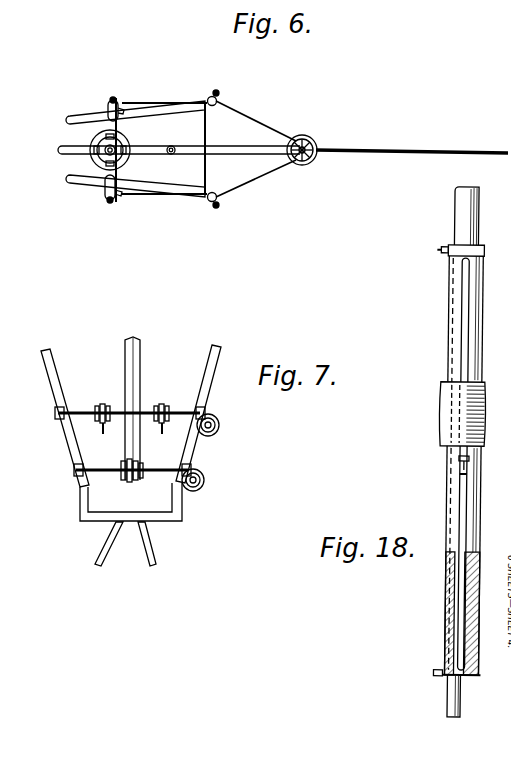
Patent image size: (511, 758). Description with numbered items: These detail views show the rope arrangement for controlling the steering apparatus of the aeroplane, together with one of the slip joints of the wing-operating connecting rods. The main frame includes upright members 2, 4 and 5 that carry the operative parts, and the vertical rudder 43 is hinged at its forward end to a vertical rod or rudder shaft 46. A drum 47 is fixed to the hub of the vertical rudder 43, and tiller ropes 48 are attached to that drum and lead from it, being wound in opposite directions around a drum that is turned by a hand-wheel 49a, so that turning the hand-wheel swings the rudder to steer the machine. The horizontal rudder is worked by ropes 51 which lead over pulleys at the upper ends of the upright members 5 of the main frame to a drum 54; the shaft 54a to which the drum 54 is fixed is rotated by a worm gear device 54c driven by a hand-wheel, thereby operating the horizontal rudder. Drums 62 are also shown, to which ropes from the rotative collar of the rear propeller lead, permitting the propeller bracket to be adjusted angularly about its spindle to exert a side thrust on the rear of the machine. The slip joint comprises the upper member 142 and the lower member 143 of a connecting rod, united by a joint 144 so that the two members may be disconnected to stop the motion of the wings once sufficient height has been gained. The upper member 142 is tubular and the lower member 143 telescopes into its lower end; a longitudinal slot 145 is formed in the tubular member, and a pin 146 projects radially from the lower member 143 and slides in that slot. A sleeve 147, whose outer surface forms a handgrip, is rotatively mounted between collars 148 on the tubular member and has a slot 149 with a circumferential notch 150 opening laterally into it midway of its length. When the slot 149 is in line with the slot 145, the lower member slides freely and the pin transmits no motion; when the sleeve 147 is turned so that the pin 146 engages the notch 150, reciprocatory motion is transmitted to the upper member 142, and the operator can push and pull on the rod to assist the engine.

In FIG. 6, the upright member 2 is at (151, 150).
In FIG. 6, the upright members 4 is at (112, 99).
In FIG. 6, the upright members 5 is at (218, 96).
In FIG. 7, the upright members 5 is at (54, 371).
In FIG. 6, the vertical rudder 43 is at (402, 152).
In FIG. 7, the vertical rudder 43 is at (9, 469).
In FIG. 7, the rudder shaft 46 is at (8, 503).
In FIG. 6, the drum 47 is at (313, 139).
In FIG. 6, the tiller ropes 48 is at (254, 181).
In FIG. 6, the hand-wheel 49a is at (92, 153).
In FIG. 7, the ropes 51 is at (134, 337).
In FIG. 7, the drum 54 is at (133, 481).
In FIG. 7, the shaft 54a is at (95, 468).
In FIG. 7, the worm gear device 54c is at (192, 470).
In FIG. 7, the drums 62 is at (100, 405).
In FIG. 18, the upper member 142 is at (452, 213).
In FIG. 18, the lower member 143 is at (450, 710).
In FIG. 18, the joint 144 is at (442, 468).
In FIG. 18, the longitudinal slot 145 is at (454, 598).
In FIG. 18, the pin 146 is at (460, 458).
In FIG. 18, the sleeve 147 is at (438, 418).
In FIG. 18, the collars 148 is at (446, 249).
In FIG. 18, the slot 149 is at (459, 334).
In FIG. 18, the circumferential notch 150 is at (462, 474).